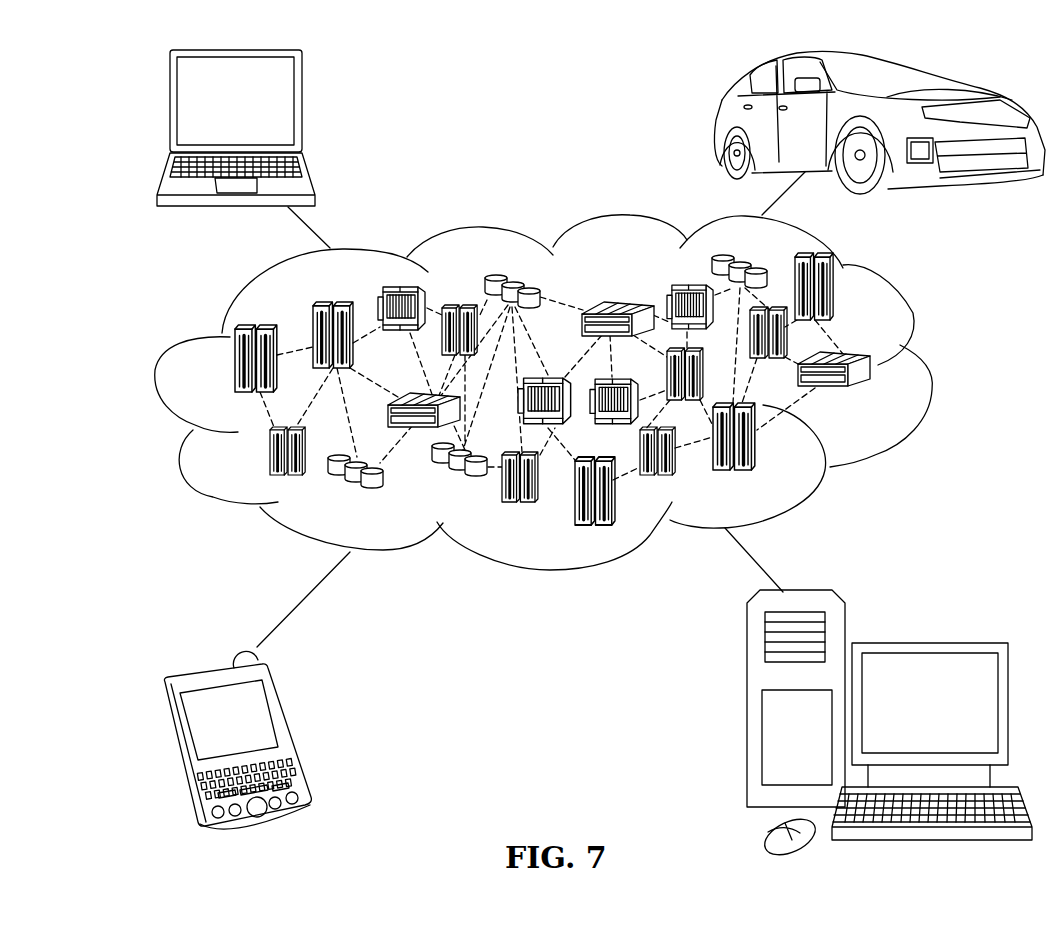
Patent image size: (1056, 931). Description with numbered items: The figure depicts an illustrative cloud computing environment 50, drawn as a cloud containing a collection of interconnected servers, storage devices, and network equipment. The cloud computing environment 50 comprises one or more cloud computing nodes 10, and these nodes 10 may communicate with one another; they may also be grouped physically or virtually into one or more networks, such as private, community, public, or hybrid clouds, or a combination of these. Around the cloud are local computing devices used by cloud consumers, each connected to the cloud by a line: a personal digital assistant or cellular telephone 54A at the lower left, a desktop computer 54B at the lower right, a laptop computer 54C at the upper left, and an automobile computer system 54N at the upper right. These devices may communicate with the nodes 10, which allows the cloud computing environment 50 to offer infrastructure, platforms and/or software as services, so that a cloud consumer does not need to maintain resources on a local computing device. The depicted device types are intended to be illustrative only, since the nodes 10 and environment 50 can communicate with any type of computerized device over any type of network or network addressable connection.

The cloud computing node 10 is at (873, 397).
The cloud computing environment 50 is at (928, 362).
The personal digital assistant or cellular telephone 54A is at (290, 730).
The desktop computer 54B is at (927, 643).
The laptop computer 54C is at (302, 108).
The automobile computer system 54N is at (720, 123).